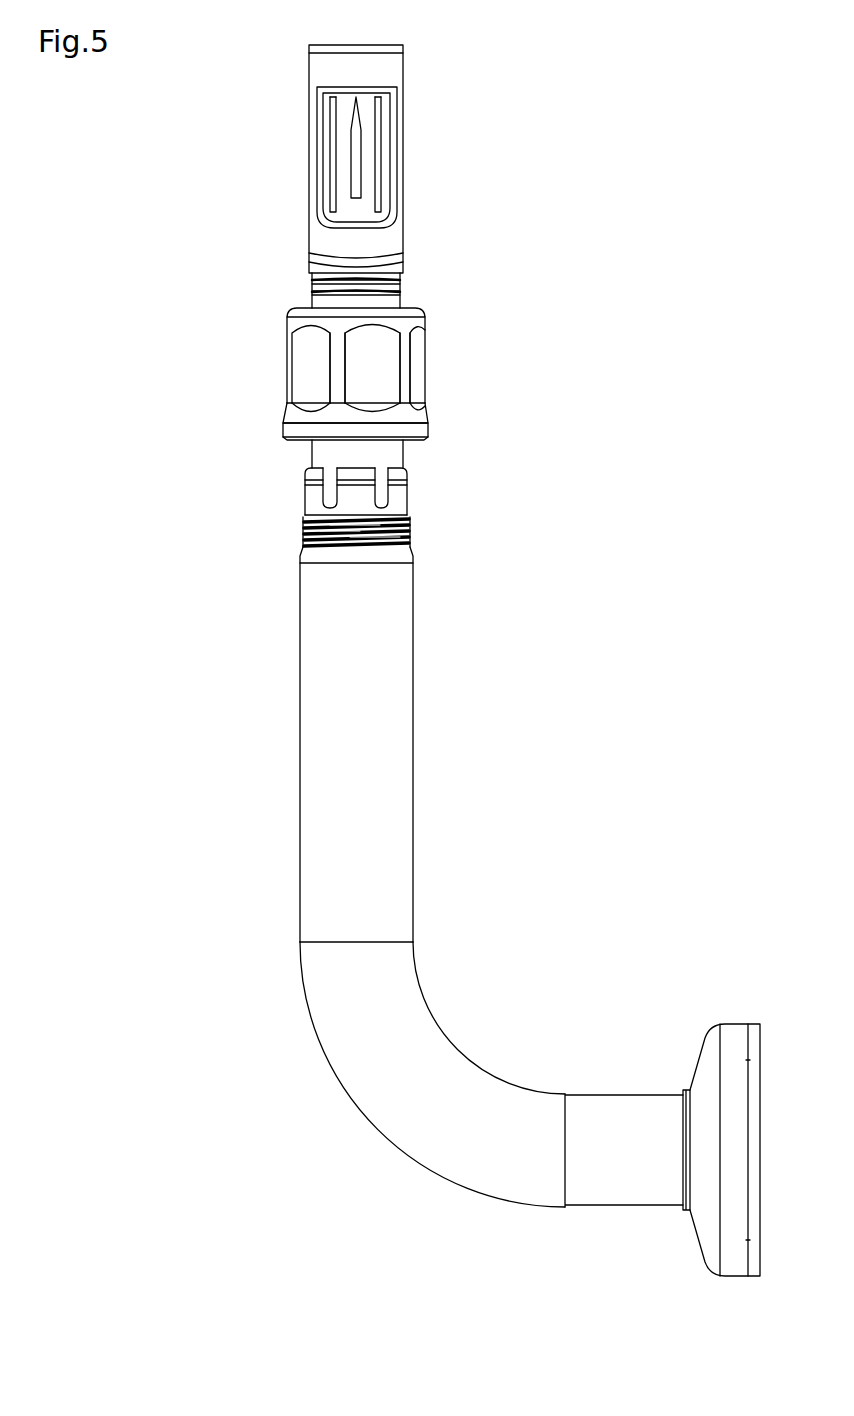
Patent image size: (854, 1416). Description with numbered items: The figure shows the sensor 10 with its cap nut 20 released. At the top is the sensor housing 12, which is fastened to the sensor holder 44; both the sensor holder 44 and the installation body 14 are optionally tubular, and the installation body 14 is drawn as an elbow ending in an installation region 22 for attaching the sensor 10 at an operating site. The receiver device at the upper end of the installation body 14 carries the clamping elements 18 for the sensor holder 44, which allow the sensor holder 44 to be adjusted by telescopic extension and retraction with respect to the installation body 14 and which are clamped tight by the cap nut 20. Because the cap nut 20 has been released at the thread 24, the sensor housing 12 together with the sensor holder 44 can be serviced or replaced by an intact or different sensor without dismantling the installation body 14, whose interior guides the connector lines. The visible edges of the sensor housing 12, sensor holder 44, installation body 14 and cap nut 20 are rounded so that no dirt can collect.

The sensor 10 is at (452, 140).
The sensor housing 12 is at (388, 74).
The installation body 14 is at (398, 637).
The clamping elements 18 is at (378, 466).
The cap nut 20 is at (418, 360).
The installation region 22 is at (660, 1042).
The thread 24 is at (418, 522).
The sensor holder 44 is at (310, 452).